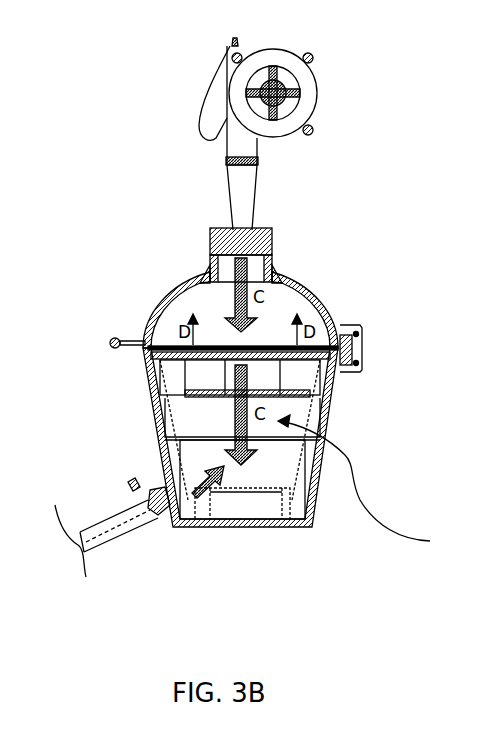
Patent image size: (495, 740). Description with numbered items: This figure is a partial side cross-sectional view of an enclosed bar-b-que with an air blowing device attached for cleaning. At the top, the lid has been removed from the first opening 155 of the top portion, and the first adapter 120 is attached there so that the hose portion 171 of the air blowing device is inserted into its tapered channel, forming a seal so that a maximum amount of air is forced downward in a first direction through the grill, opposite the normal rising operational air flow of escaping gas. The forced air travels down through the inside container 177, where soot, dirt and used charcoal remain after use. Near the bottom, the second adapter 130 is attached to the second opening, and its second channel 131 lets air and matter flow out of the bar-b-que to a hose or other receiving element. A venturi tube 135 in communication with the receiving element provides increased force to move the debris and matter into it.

The hose portion 171 is at (262, 190).
The first opening 155 is at (218, 236).
The first adapter 120 is at (273, 246).
The second channel 131 is at (150, 487).
The venturi tube 135 is at (140, 494).
The second adapter 130 is at (160, 512).
The inside container 177 is at (378, 484).